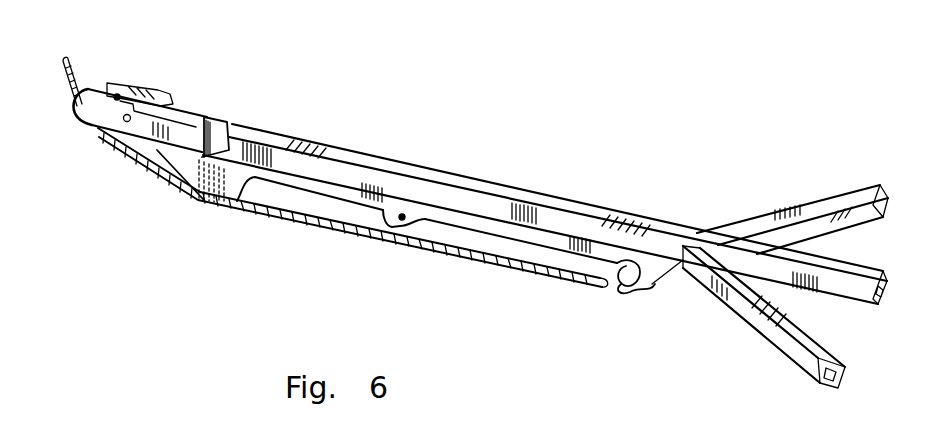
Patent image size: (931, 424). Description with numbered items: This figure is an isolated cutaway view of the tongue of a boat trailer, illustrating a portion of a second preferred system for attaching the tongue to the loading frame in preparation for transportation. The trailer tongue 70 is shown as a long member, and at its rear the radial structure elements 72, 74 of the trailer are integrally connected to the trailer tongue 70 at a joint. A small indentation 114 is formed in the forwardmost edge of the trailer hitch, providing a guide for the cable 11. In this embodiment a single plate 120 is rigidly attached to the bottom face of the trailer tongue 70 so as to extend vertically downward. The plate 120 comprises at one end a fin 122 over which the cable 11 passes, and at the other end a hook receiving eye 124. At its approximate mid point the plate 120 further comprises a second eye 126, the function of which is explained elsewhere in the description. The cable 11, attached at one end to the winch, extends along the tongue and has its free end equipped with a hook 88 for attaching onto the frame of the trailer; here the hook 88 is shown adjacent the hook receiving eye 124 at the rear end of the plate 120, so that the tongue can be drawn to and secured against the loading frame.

The cable 11 is at (75, 80).
The trailer tongue 70 is at (517, 198).
The radial structure element 72 is at (782, 335).
The radial structure element 74 is at (823, 203).
The hook 88 is at (629, 292).
The indentation 114 is at (75, 107).
The plate 120 is at (449, 210).
The fin 122 is at (203, 198).
The hook receiving eye 124 is at (652, 290).
The second eye 126 is at (393, 229).